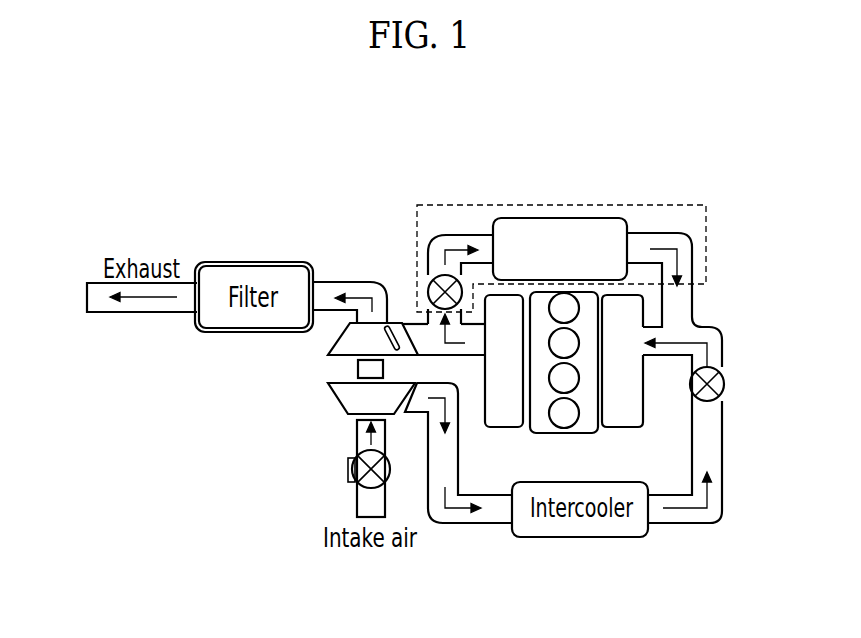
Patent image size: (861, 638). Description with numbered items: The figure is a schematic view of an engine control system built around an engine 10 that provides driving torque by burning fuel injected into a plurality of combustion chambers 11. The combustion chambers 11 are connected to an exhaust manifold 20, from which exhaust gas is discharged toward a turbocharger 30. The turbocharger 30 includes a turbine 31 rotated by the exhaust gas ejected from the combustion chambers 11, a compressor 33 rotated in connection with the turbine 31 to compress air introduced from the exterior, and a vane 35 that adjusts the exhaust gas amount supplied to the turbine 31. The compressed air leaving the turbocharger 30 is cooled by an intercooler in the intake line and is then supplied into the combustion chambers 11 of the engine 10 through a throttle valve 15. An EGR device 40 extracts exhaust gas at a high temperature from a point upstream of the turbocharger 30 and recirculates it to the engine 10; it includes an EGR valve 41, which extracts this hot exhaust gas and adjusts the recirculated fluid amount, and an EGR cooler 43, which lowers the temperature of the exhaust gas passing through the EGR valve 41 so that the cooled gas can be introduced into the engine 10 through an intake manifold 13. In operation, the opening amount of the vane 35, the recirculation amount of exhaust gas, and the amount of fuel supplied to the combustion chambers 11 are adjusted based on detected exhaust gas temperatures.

The engine 10 is at (626, 374).
The combustion chamber 11 is at (553, 420).
The intake manifold 13 is at (644, 390).
The throttle valve 15 is at (726, 383).
The exhaust manifold 20 is at (485, 383).
The turbocharger 30 is at (320, 314).
The turbine 31 is at (335, 345).
The compressor 33 is at (334, 392).
The vane 35 is at (397, 323).
The EGR device 40 is at (543, 248).
The EGR valve 41 is at (430, 285).
The EGR cooler 43 is at (561, 217).